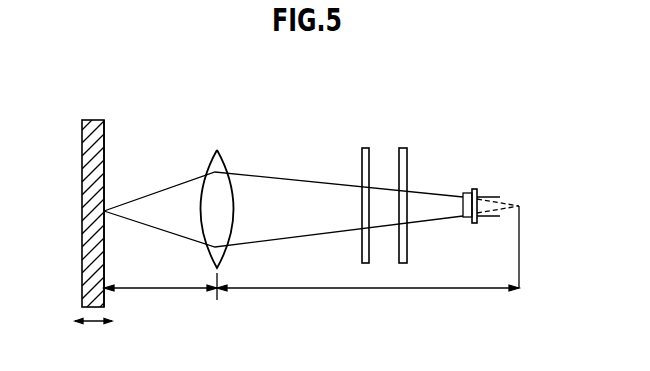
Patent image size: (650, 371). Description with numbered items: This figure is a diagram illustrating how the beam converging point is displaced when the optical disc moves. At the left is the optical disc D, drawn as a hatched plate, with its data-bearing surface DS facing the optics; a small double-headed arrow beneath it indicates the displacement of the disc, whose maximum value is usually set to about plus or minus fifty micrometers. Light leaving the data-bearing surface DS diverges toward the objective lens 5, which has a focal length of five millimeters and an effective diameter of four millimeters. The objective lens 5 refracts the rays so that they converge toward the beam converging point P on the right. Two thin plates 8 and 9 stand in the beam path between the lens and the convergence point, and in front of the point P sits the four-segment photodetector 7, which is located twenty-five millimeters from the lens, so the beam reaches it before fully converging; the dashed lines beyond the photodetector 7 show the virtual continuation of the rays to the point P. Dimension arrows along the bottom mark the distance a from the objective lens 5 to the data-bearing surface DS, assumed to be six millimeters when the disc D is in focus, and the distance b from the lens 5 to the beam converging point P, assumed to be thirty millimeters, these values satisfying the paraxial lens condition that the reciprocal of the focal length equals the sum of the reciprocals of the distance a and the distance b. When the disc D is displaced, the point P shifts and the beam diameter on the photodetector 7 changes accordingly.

The optical disc D is at (82, 178).
The data-bearing surface DS is at (108, 156).
The objective lens 5 is at (222, 151).
The four-segment photodetector 7 is at (467, 193).
The plate 8 is at (366, 148).
The plate 9 is at (403, 148).
The beam converging point P is at (520, 204).
The distance a is at (160, 279).
The distance b is at (368, 278).